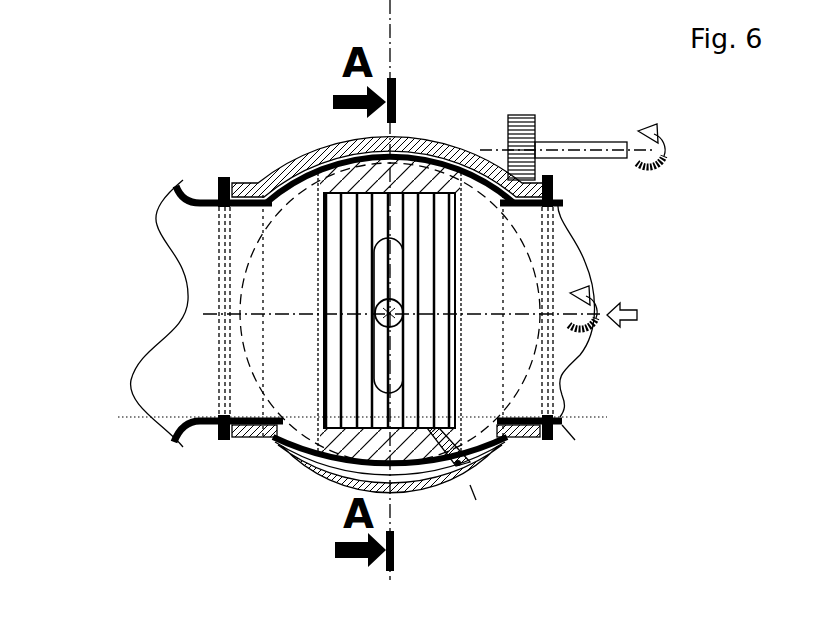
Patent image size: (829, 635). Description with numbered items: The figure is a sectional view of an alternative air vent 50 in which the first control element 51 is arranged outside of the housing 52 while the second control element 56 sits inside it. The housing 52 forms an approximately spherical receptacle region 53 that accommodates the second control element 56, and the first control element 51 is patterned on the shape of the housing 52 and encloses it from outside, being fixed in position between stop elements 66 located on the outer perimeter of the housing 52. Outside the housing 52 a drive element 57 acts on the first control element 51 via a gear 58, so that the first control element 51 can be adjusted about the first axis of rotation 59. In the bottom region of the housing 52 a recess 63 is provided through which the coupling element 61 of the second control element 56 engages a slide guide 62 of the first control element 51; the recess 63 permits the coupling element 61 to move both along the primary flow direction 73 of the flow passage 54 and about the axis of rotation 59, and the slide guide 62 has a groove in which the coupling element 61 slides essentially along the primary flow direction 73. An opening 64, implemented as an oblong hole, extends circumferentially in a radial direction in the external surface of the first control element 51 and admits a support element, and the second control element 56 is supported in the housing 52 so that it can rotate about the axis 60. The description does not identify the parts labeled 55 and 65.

The air vent 50 is at (458, 110).
The first control element 51 is at (407, 137).
The housing 52 is at (200, 180).
The receptacle region 53 is at (298, 162).
The flow passage 54 is at (568, 270).
The inlet pipe 55 is at (188, 258).
The second control element 56 is at (464, 156).
The drive element 57 is at (578, 142).
The gear 58 is at (531, 117).
The first axis of rotation 59 is at (566, 366).
The axis 60 is at (388, 318).
The coupling element 61 is at (480, 468).
The slide guide 62 is at (433, 488).
The recess 63 is at (262, 442).
The opening 64 is at (395, 243).
The rotor sieve 65 is at (443, 243).
The stop elements 66 is at (228, 177).
The primary flow direction 73 is at (637, 313).